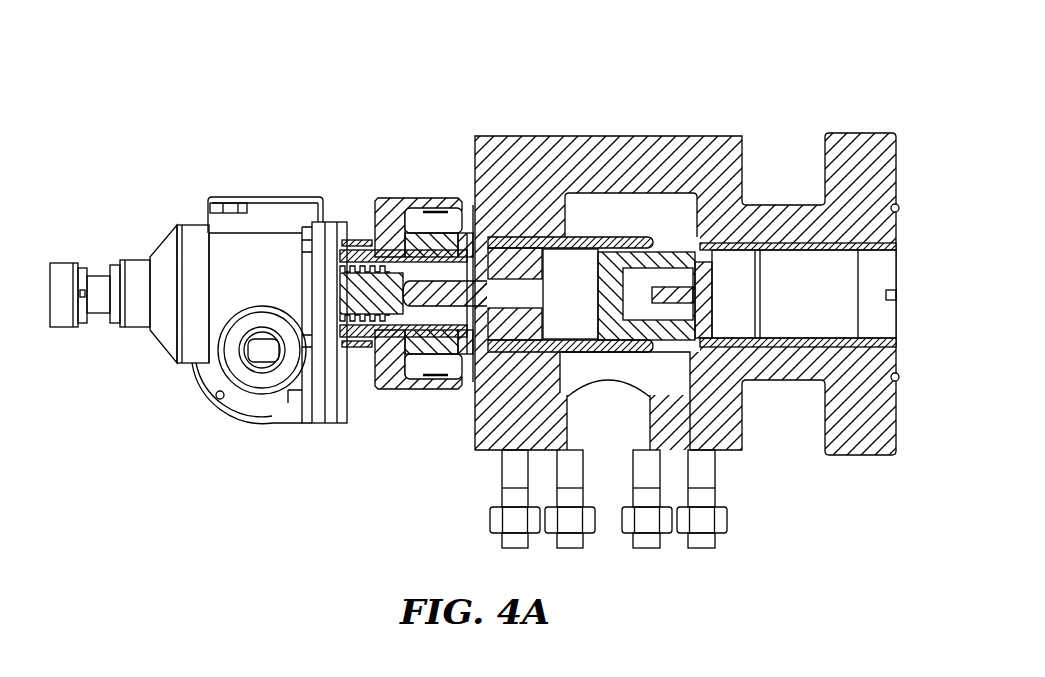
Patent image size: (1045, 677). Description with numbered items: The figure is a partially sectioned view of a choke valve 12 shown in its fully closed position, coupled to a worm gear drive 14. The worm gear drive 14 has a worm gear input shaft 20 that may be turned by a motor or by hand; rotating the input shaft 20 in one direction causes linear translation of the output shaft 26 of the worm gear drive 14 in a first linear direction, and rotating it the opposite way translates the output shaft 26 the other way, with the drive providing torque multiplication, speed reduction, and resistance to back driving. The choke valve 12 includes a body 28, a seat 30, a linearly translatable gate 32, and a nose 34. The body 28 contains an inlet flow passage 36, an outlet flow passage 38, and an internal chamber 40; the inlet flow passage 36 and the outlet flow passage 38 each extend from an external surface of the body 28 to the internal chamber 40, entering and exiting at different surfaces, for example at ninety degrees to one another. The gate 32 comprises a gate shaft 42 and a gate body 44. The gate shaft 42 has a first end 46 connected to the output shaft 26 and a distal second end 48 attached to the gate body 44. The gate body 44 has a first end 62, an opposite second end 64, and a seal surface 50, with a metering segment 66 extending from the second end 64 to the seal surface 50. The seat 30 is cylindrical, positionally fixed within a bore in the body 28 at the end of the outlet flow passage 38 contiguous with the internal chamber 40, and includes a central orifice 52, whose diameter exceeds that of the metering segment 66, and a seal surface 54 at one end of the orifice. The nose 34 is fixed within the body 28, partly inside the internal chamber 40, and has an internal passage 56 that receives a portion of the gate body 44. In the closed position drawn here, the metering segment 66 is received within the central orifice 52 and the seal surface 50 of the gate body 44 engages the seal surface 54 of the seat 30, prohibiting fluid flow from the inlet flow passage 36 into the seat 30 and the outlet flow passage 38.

The choke valve 12 is at (802, 74).
The worm gear drive 14 is at (178, 402).
The worm gear input shaft 20 is at (262, 352).
The output shaft 26 is at (347, 297).
The body 28 is at (744, 432).
The seat 30 is at (766, 250).
The gate 32 is at (677, 222).
The nose 34 is at (568, 178).
The inlet flow passage 36 is at (641, 424).
The outlet flow passage 38 is at (848, 331).
The internal chamber 40 is at (602, 200).
The gate shaft 42 is at (460, 392).
The gate body 44 is at (640, 203).
The first end 46 is at (408, 392).
The second end 48 is at (553, 348).
The seal surface 50 is at (702, 245).
The central orifice 52 is at (727, 283).
The seal surface 54 is at (715, 340).
The internal passage 56 is at (572, 257).
The first end 62 is at (572, 330).
The second end 64 is at (717, 302).
The metering segment 66 is at (730, 236).